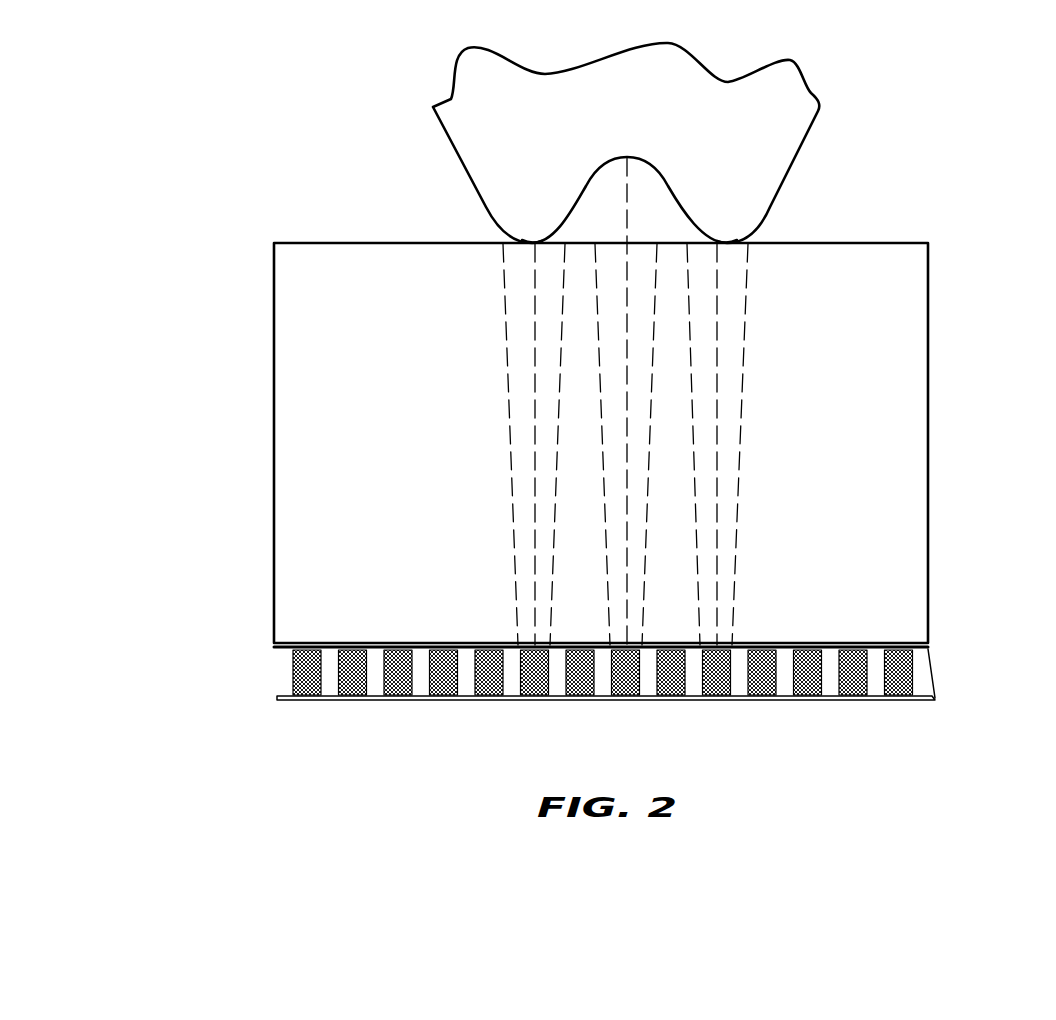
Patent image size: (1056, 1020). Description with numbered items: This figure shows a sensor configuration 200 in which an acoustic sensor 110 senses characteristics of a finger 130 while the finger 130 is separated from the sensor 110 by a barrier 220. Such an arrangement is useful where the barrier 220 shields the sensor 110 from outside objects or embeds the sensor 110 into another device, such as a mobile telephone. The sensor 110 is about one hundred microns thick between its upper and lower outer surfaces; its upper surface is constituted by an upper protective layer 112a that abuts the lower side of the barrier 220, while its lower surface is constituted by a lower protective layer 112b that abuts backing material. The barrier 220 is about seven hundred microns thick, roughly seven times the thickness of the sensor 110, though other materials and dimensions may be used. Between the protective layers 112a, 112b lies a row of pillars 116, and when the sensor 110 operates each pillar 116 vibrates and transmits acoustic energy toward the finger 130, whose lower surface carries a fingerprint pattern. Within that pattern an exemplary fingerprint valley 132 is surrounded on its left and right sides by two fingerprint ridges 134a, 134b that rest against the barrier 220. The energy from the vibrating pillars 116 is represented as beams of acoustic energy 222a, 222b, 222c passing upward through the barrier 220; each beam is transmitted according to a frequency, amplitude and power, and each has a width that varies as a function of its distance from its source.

The sensor configuration embodiment 200 is at (1039, 91).
The finger 130 is at (648, 130).
The fingerprint valley 132 is at (641, 180).
The fingerprint ridge 134a is at (535, 242).
The fingerprint ridge 134b is at (729, 242).
The barrier 220 is at (371, 305).
The beam of acoustic energy 222a is at (513, 509).
The beam of acoustic energy 222b is at (646, 611).
The beam of acoustic energy 222c is at (738, 502).
The acoustic sensor 110 is at (619, 678).
The upper protective layer 112a is at (932, 646).
The lower protective layer 112b is at (936, 699).
The pillar 116 is at (908, 668).